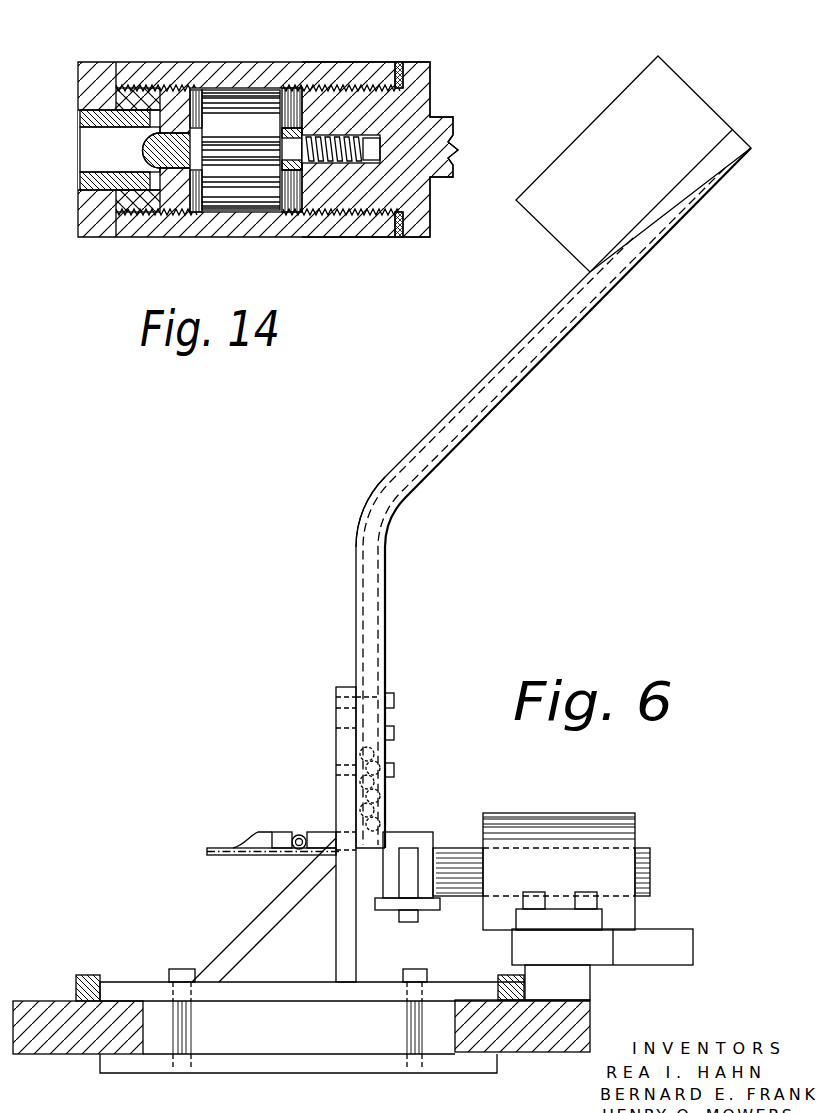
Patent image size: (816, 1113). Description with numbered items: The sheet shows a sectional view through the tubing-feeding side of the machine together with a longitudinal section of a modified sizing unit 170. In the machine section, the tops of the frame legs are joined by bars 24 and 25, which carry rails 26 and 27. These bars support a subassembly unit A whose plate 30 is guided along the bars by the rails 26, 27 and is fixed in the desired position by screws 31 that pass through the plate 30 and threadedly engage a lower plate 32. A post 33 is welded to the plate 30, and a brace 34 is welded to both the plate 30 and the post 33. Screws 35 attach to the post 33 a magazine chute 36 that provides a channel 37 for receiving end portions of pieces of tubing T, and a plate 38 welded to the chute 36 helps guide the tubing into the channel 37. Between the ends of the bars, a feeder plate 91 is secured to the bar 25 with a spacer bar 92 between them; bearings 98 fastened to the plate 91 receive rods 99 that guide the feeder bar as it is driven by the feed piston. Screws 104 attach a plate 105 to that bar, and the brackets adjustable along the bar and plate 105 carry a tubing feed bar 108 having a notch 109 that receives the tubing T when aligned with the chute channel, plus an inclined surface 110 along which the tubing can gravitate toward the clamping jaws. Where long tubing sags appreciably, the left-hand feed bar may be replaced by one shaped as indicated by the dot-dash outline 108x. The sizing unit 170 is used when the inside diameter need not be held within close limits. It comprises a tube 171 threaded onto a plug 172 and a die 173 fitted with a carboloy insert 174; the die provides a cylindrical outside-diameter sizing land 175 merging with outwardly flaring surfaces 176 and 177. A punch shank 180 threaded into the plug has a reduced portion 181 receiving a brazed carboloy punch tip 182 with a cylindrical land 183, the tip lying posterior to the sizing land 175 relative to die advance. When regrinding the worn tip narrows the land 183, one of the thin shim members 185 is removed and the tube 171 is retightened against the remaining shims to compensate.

In FIG. 14, the sizing unit 170 is at (258, 62).
In FIG. 14, the tube 171 is at (372, 66).
In FIG. 14, the plug 172 is at (422, 104).
In FIG. 14, the die 173 is at (90, 208).
In FIG. 14, the insert 174 is at (82, 119).
In FIG. 14, the O.D. sizing land 175 is at (94, 165).
In FIG. 14, the outwardly flaring surface 176 is at (82, 139).
In FIG. 14, the outwardly flaring surface 177 is at (148, 112).
In FIG. 14, the punch shank 180 is at (278, 138).
In FIG. 14, the reduced portion 181 is at (202, 142).
In FIG. 14, the punch tip 182 is at (184, 225).
In FIG. 14, the cylindrical land 183 is at (146, 225).
In FIG. 14, the shim members 185 is at (400, 238).
In FIG. 6, the bar 24 is at (70, 1056).
In FIG. 6, the bar 25 is at (580, 1054).
In FIG. 6, the rail 26 is at (90, 975).
In FIG. 6, the rail 27 is at (503, 975).
In FIG. 6, the plate 30 is at (320, 1003).
In FIG. 6, the screws 31 is at (192, 968).
In FIG. 6, the plate 32 is at (322, 1074).
In FIG. 6, the post 33 is at (336, 735).
In FIG. 6, the brace 34 is at (252, 925).
In FIG. 6, the screws 35 is at (414, 738).
In FIG. 6, the magazine chute 36 is at (387, 647).
In FIG. 6, the channel 37 is at (378, 531).
In FIG. 6, the plate 38 is at (534, 214).
In FIG. 6, the plate 91 is at (694, 952).
In FIG. 6, the spacer bar 92 is at (591, 992).
In FIG. 6, the bearings 98 is at (568, 813).
In FIG. 6, the rods 99 is at (460, 848).
In FIG. 6, the screws 104 is at (405, 922).
In FIG. 6, the plate 105 is at (438, 910).
In FIG. 6, the tubing feed bar 108 is at (256, 856).
In FIG. 6, the alternative feed bar 108x is at (274, 834).
In FIG. 6, the notch 109 is at (300, 835).
In FIG. 6, the inclined surface 110 is at (238, 848).
In FIG. 6, the subassembly unit A is at (336, 693).
In FIG. 6, the tubing T is at (372, 790).